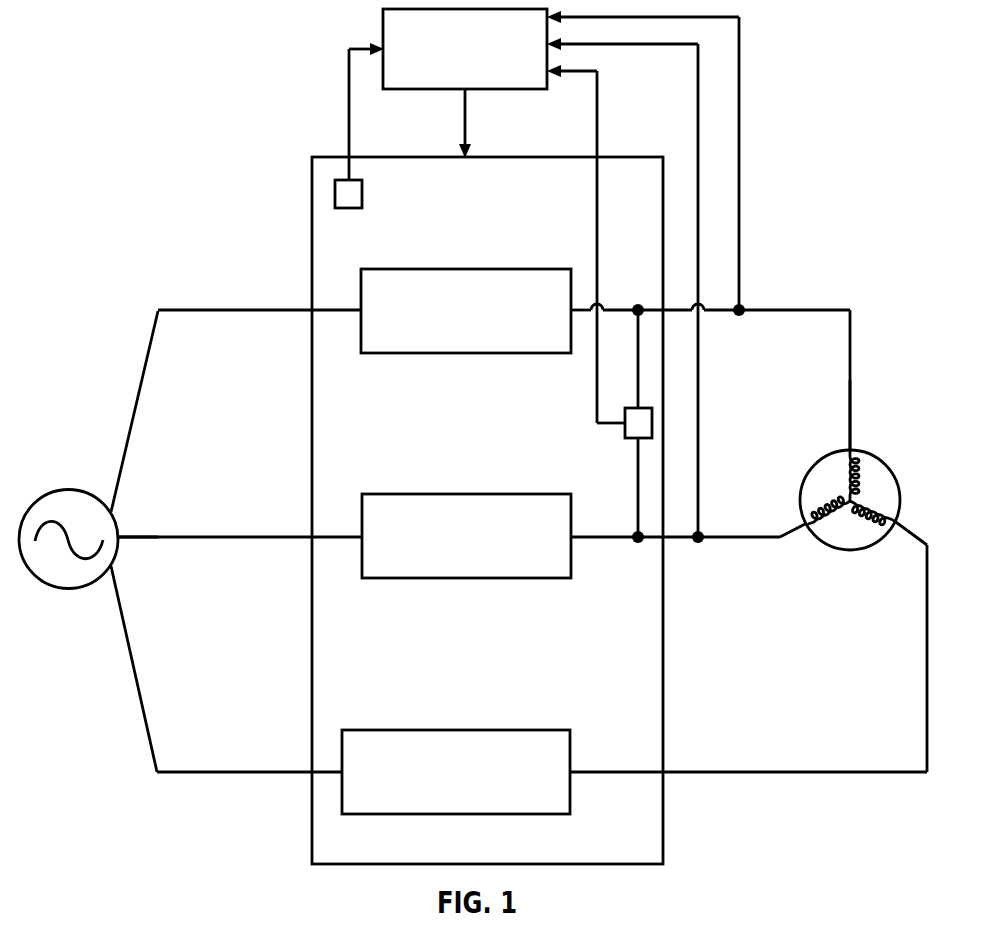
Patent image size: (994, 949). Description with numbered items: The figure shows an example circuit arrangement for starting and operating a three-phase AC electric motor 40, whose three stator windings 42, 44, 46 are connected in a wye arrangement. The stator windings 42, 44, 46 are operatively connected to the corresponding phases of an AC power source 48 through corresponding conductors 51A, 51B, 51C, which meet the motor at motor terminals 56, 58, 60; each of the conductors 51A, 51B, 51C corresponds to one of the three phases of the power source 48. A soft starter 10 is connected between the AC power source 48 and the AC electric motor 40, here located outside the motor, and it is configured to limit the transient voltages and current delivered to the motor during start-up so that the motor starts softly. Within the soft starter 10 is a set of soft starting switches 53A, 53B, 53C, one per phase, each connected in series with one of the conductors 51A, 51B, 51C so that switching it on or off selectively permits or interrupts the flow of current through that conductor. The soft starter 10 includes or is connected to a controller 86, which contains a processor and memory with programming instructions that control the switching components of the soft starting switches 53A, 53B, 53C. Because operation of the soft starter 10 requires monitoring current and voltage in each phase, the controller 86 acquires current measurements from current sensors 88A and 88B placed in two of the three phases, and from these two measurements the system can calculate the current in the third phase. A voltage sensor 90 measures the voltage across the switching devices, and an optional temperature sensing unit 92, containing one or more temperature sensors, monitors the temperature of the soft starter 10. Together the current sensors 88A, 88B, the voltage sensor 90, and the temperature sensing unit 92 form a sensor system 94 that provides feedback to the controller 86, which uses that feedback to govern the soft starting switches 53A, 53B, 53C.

The soft starter 10 is at (311, 203).
The AC electric motor 40 is at (860, 450).
The stator winding 42 is at (855, 490).
The stator winding 44 is at (873, 513).
The stator winding 46 is at (833, 500).
The AC power source 48 is at (83, 588).
The conductor 51A is at (290, 308).
The conductor 51B is at (290, 534).
The conductor 51C is at (302, 770).
The soft starting switch 53A is at (452, 282).
The soft starting switch 53B is at (467, 493).
The soft starting switch 53C is at (452, 729).
The motor terminal 56 is at (848, 380).
The motor terminal 58 is at (793, 528).
The motor terminal 60 is at (912, 535).
The controller 86 is at (435, 90).
The current sensor 88A is at (744, 306).
The current sensor 88B is at (704, 533).
The voltage sensor 90 is at (632, 440).
The temperature sensing unit 92 is at (363, 193).
The sensor system 94 is at (762, 157).